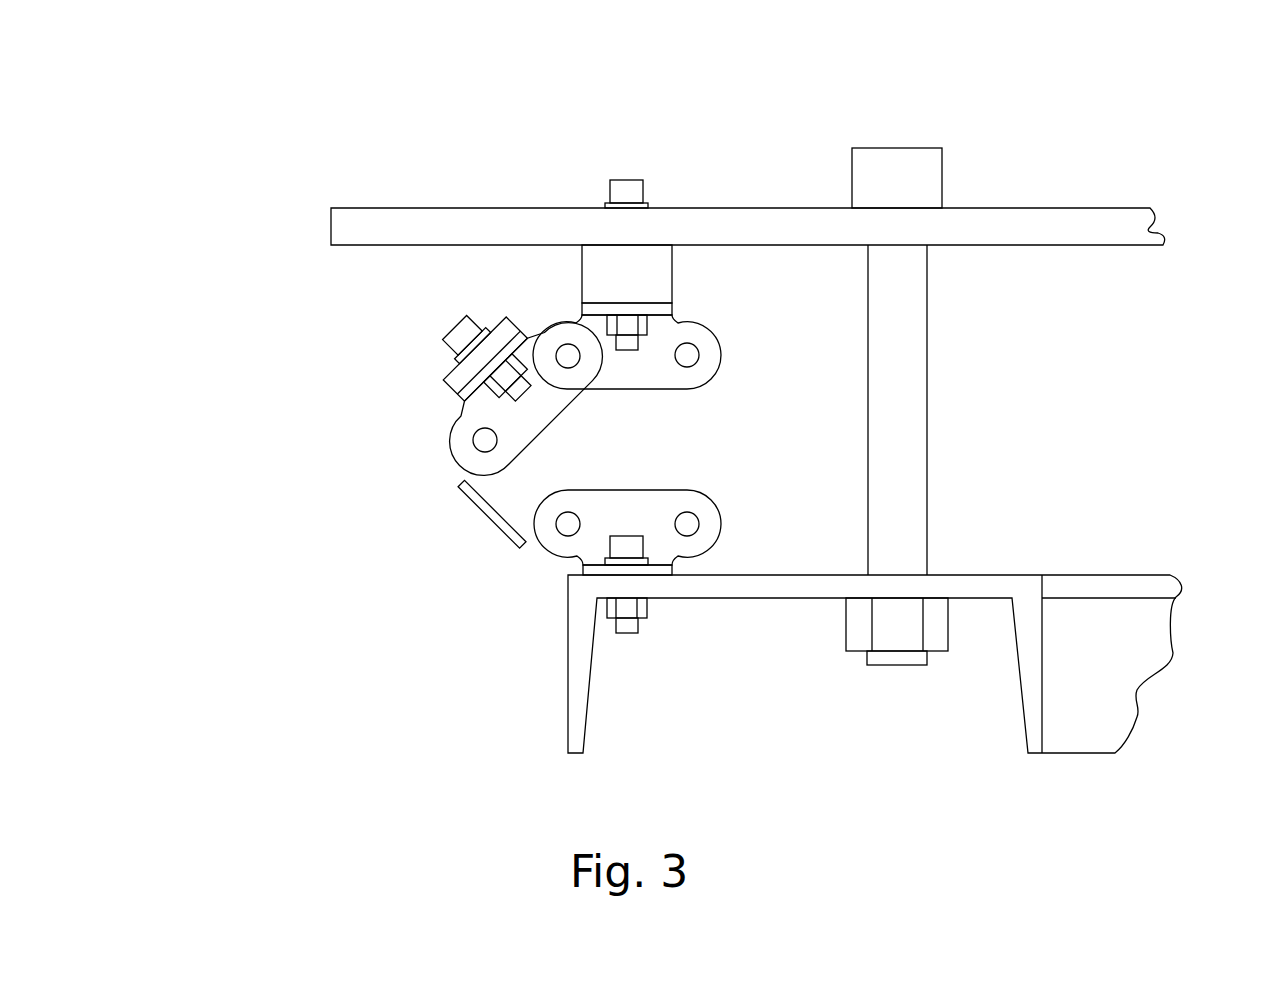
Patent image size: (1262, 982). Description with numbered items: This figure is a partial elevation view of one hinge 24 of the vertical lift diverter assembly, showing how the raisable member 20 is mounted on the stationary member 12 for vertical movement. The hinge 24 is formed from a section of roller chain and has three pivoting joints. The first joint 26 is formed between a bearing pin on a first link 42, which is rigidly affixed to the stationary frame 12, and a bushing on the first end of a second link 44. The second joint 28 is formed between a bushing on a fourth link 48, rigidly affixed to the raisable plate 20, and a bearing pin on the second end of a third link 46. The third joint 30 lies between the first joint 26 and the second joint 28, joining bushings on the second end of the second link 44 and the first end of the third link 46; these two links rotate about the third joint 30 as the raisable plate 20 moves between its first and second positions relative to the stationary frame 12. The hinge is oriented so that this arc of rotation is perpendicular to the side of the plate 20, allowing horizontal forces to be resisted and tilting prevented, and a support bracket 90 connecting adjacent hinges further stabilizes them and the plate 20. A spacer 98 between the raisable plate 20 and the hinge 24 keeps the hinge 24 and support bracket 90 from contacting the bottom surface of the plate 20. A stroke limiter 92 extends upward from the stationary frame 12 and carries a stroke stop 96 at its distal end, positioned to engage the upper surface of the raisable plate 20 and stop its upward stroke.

The stationary member 12 is at (762, 598).
The raisable member 20 is at (427, 207).
The hinge 24 is at (367, 557).
The first joint 26 is at (559, 534).
The second joint 28 is at (560, 343).
The third joint 30 is at (473, 440).
The first link 42 is at (633, 510).
The second link 44 is at (513, 497).
The third link 46 is at (522, 415).
The fourth link 48 is at (650, 360).
The support bracket 90 is at (466, 398).
The stroke limiter 92 is at (900, 378).
The stroke stop 96 is at (904, 175).
The spacer 98 is at (602, 274).